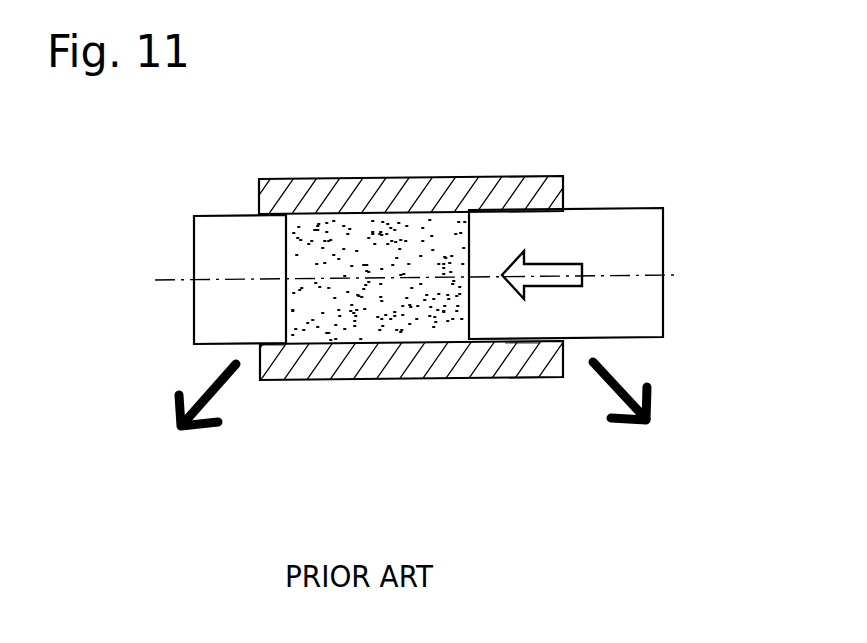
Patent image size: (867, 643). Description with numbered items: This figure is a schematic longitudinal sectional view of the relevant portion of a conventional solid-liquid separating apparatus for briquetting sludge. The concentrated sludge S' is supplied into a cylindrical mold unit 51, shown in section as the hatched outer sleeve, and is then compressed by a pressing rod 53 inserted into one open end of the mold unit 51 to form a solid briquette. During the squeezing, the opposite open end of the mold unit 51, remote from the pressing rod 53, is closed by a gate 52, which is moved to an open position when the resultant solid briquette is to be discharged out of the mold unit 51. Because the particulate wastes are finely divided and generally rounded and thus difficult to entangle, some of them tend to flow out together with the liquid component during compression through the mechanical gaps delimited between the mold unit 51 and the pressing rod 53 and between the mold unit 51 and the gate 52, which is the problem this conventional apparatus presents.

The cylindrical mold unit 51 is at (428, 197).
The gate 52 is at (218, 247).
The pressing rod 53 is at (584, 231).
The concentrated sludge S' is at (379, 210).